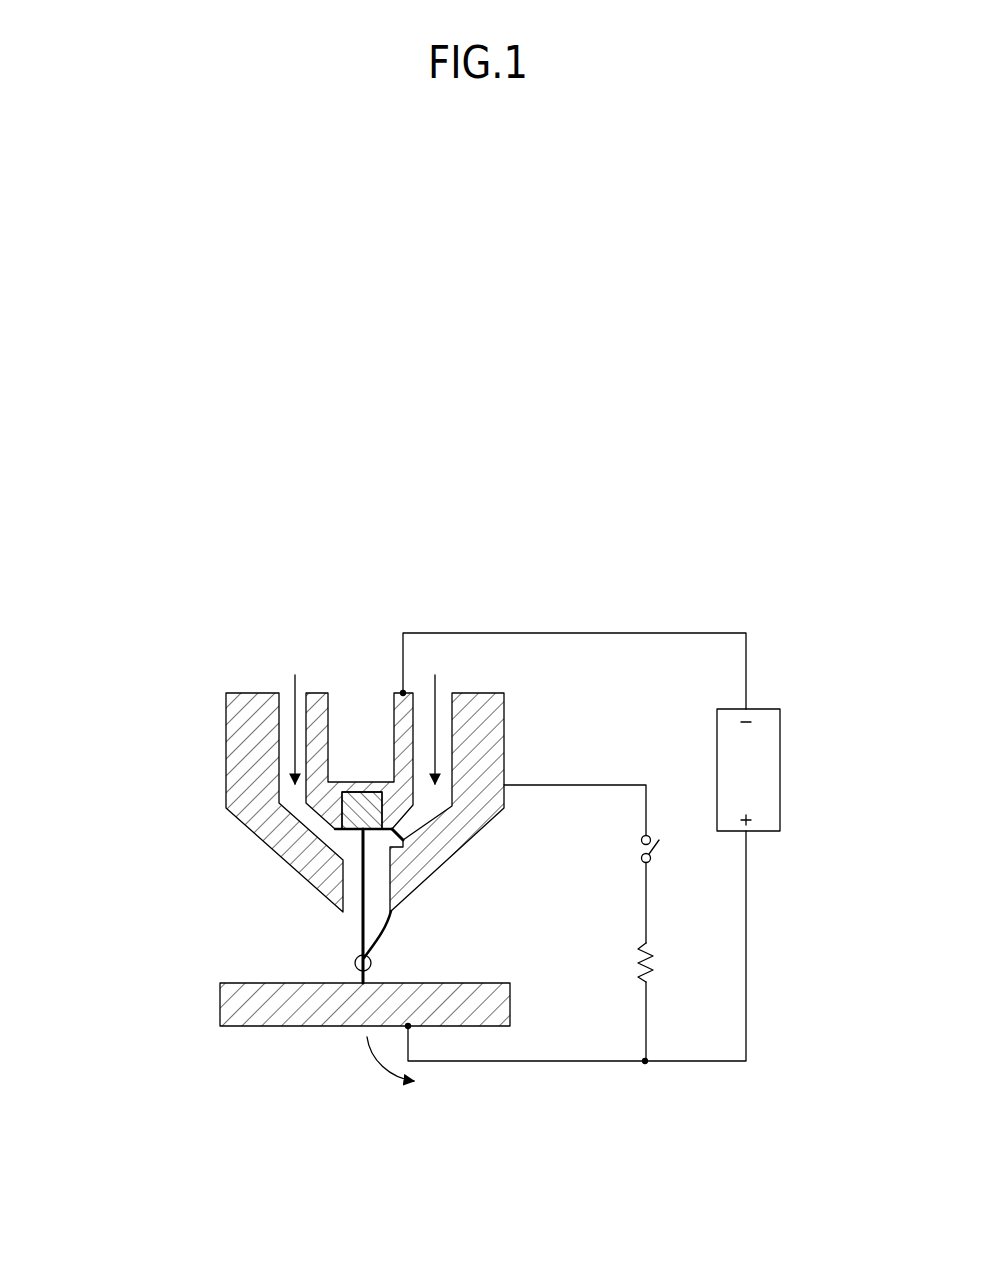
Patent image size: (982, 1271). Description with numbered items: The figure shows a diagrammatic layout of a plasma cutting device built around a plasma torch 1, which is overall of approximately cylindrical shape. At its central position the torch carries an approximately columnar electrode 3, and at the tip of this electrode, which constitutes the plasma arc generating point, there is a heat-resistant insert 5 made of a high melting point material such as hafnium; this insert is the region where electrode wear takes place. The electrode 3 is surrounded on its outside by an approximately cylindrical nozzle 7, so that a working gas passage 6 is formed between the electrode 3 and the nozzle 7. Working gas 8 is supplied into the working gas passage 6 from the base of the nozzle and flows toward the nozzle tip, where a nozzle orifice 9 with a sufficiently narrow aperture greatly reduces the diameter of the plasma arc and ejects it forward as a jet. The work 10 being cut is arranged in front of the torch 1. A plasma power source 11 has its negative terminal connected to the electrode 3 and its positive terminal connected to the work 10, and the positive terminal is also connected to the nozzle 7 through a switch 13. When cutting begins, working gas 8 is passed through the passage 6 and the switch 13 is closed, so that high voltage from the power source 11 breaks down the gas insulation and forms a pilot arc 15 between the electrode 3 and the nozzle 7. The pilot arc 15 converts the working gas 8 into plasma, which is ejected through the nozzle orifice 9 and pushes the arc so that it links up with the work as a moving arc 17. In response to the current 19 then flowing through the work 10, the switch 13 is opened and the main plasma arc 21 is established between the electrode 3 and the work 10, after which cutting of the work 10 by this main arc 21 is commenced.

The plasma torch 1 is at (215, 686).
The electrode 3 is at (325, 694).
The heat-resistant insert 5 is at (342, 823).
The working gas passage 6 is at (285, 755).
The nozzle 7 is at (546, 718).
The working gas 8 is at (477, 678).
The nozzle orifice 9 is at (390, 880).
The work 10 is at (403, 983).
The plasma power source 11 is at (780, 730).
The switch 13 is at (657, 850).
The pilot arc 15 is at (398, 836).
The moving arc 17 is at (353, 961).
The current 19 is at (373, 1068).
The main plasma arc 21 is at (362, 915).